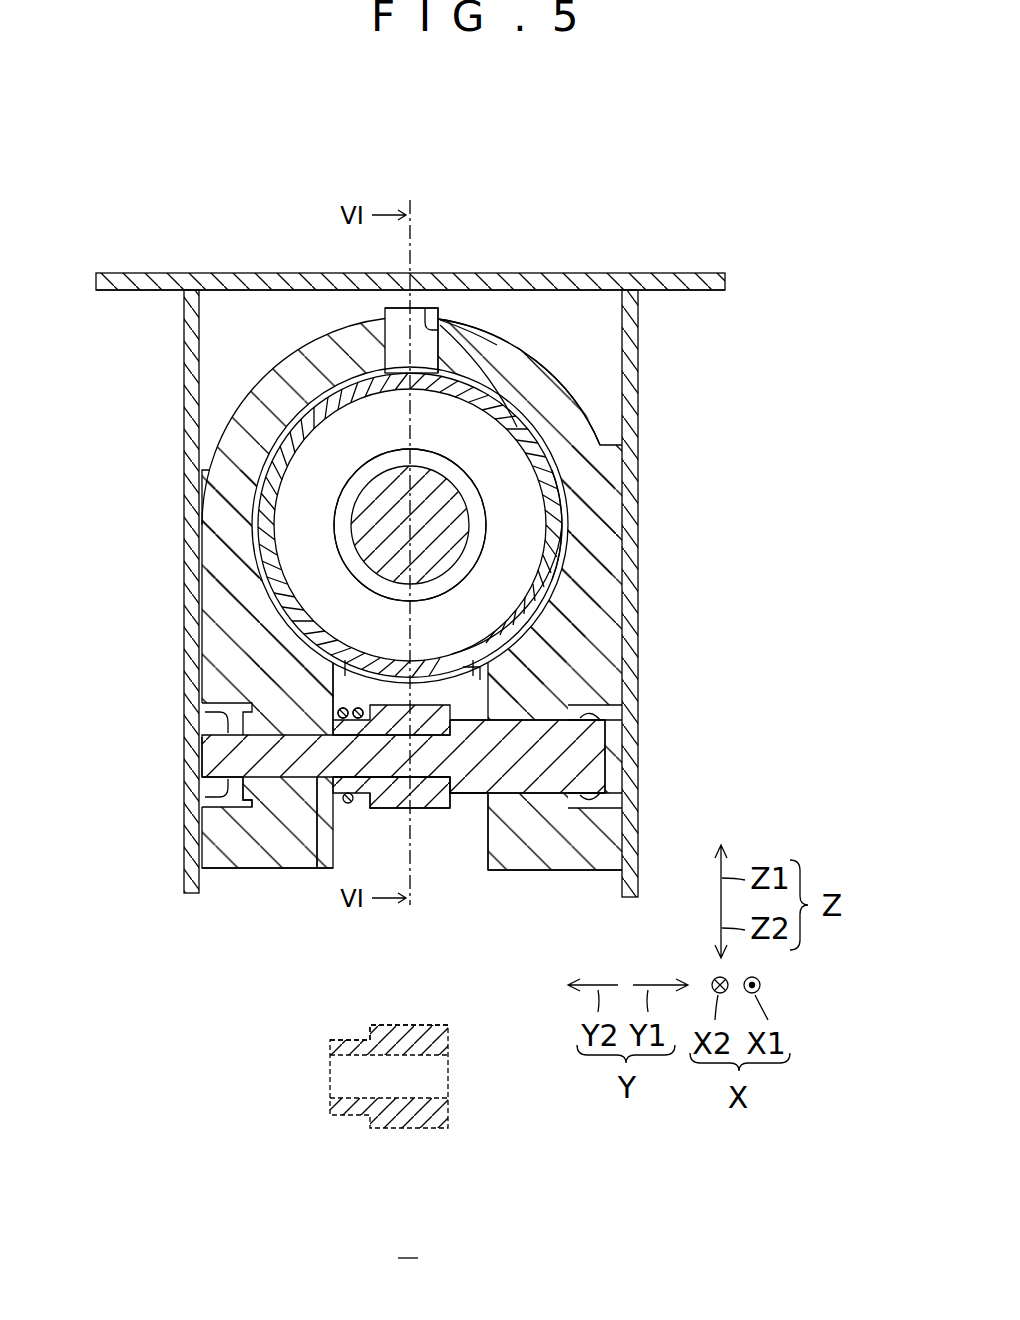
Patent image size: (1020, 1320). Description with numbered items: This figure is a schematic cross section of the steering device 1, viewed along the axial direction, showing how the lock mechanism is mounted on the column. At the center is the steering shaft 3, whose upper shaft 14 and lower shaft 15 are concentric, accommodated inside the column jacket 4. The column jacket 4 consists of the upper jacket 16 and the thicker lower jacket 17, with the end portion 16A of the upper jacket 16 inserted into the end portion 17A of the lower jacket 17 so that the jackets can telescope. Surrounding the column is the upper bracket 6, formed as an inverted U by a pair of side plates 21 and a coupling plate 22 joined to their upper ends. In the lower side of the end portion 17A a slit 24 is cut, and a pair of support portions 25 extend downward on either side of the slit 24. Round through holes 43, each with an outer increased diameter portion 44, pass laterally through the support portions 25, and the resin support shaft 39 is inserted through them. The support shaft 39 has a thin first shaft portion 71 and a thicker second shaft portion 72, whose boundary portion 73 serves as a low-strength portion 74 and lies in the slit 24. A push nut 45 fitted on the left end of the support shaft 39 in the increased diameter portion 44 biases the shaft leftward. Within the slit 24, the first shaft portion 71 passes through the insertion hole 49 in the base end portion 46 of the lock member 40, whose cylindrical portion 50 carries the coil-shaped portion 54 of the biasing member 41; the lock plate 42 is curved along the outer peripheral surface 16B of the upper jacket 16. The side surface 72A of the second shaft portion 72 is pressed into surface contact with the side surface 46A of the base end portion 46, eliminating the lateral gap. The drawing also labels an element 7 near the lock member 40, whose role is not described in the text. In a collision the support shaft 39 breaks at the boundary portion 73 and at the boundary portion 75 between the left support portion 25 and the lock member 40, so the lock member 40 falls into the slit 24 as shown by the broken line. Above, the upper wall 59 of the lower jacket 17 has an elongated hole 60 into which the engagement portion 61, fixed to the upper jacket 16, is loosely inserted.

The steering device 1 is at (408, 1242).
The steering shaft 3 is at (115, 442).
The column jacket 4 is at (705, 442).
The upper bracket 6 is at (677, 260).
The elastic body 7 is at (368, 822).
The upper shaft 14 is at (347, 492).
The lower shaft 15 is at (365, 527).
The upper jacket 16 is at (557, 518).
The end portion of the upper jacket 16A is at (517, 427).
The outer peripheral surface of the upper jacket 16B is at (570, 538).
The lower jacket 17 is at (600, 458).
The end portion of the lower jacket 17A is at (497, 345).
The side plate 21 is at (193, 368).
The coupling plate 22 is at (560, 283).
The slit 24 is at (485, 853).
The support portion 25 is at (222, 855).
The support shaft 39 is at (290, 758).
The lock member 40 is at (398, 822).
The biasing member 41 is at (350, 713).
The lock plate 42 is at (438, 700).
The through hole 43 is at (283, 860).
The increased diameter portion 44 is at (213, 712).
The push nut 45 is at (215, 793).
The base end portion 46 is at (425, 810).
The side surface of the base end portion 46A is at (445, 808).
The insertion hole 49 is at (468, 668).
The cylindrical portion 50 is at (326, 835).
The coil-shaped portion 54 is at (343, 707).
The upper wall 59 is at (440, 318).
The elongated hole 60 is at (425, 330).
The engagement portion 61 is at (400, 322).
The first shaft portion 71 is at (333, 728).
The second shaft portion 72 is at (540, 727).
The side surface of the second shaft portion 72A is at (450, 795).
The boundary portion 73 is at (430, 812).
The low-strength portion 74 is at (389, 1032).
The boundary portion 75 is at (320, 700).